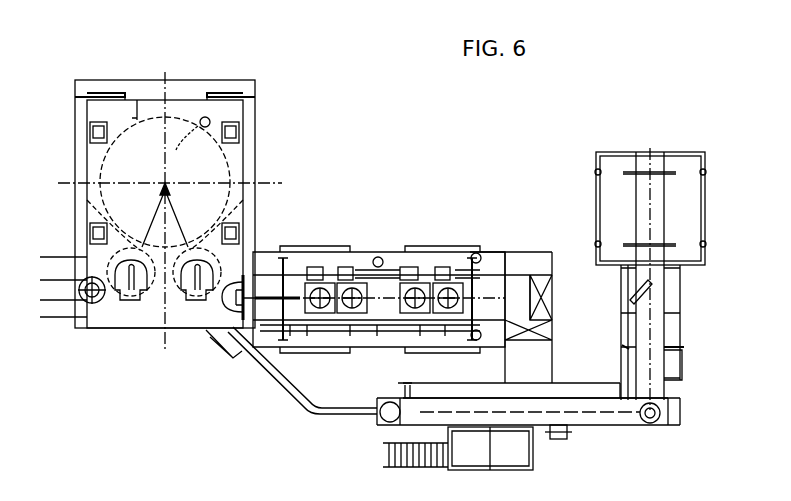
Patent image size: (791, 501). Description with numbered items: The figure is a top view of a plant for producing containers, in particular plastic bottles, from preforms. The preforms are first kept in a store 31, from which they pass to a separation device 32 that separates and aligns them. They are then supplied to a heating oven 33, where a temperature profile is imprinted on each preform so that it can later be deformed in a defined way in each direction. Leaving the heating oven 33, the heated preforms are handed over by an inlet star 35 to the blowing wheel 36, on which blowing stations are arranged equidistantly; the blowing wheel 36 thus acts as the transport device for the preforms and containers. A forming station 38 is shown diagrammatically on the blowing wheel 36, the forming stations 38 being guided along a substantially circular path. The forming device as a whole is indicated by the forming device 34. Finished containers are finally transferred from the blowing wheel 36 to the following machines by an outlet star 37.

The store 31 is at (685, 195).
The separation device 32 is at (590, 433).
The heating oven 33 is at (366, 260).
The forming device 34 is at (217, 88).
The inlet star 35 is at (188, 296).
The blowing wheel 36 is at (137, 115).
The outlet star 37 is at (132, 298).
The forming station 38 is at (208, 117).